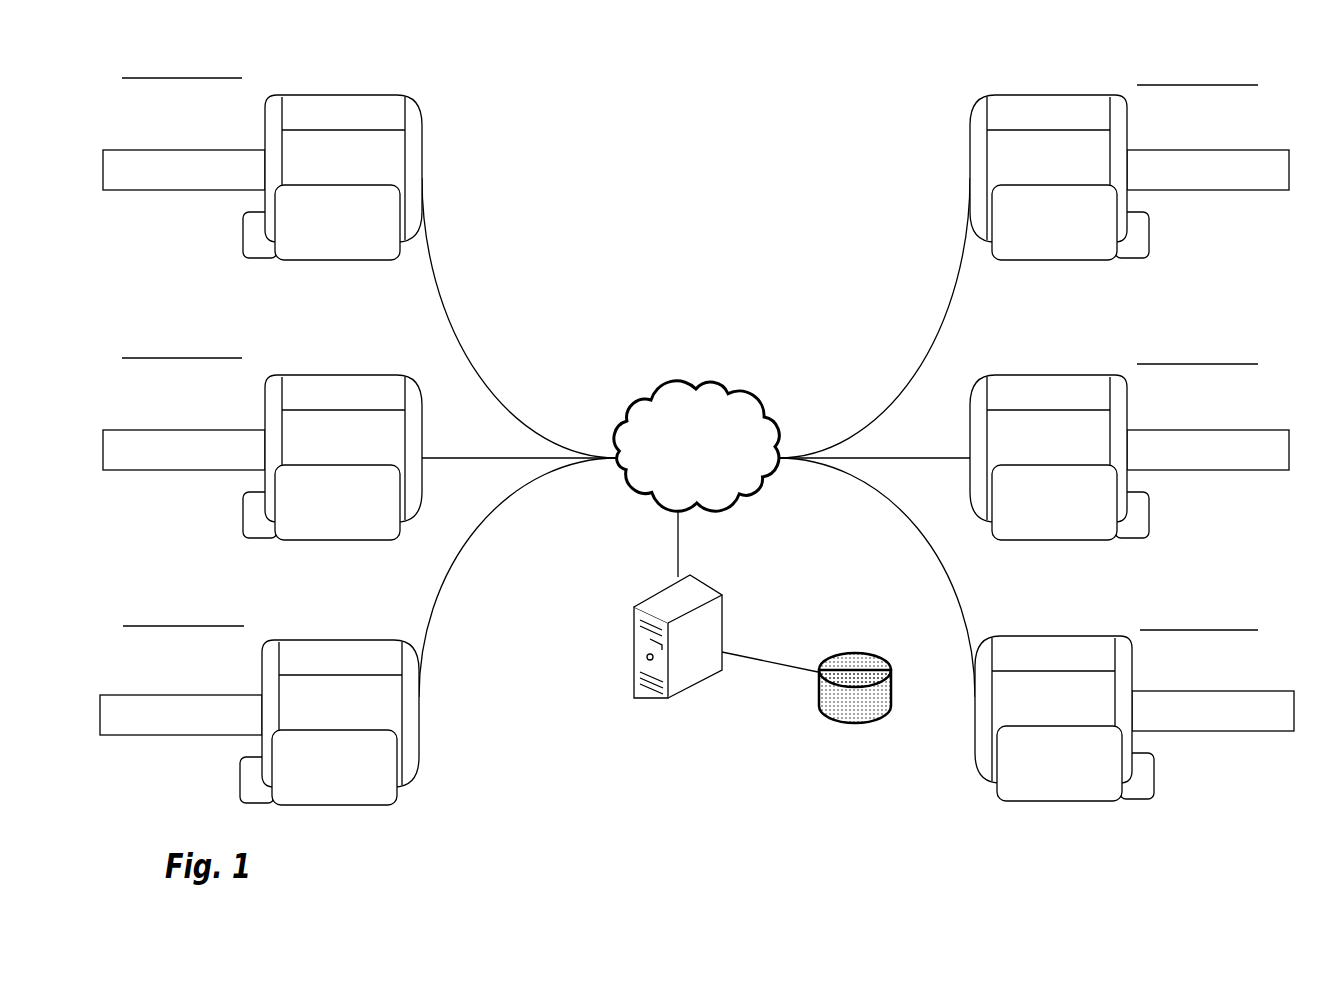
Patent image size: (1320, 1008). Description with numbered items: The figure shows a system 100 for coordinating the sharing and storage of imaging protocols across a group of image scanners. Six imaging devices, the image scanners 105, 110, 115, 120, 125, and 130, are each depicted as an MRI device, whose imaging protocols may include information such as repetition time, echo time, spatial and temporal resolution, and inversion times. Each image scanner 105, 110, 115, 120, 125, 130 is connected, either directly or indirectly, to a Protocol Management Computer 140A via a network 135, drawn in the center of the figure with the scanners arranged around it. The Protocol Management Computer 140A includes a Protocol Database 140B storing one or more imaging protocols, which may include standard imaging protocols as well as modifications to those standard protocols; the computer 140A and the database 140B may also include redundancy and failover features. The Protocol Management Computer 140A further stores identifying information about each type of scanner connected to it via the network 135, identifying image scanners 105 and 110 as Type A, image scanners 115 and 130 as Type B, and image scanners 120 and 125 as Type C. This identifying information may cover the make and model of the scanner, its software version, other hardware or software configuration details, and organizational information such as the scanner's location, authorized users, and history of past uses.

The system 100 is at (797, 105).
The image scanner 105 is at (345, 90).
The image scanner 110 is at (345, 368).
The image scanner 115 is at (340, 635).
The image scanner 120 is at (1047, 92).
The image scanner 125 is at (1045, 373).
The image scanner 130 is at (1048, 633).
The network 135 is at (643, 417).
The Protocol Management Computer 140A is at (632, 657).
The Protocol Database 140B is at (857, 650).